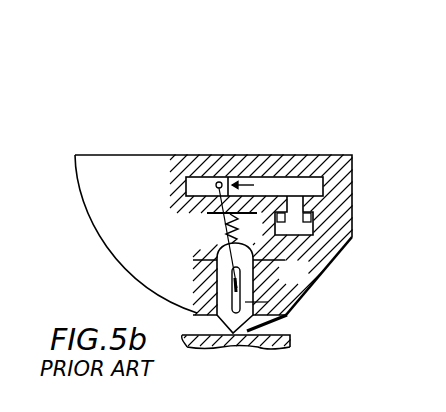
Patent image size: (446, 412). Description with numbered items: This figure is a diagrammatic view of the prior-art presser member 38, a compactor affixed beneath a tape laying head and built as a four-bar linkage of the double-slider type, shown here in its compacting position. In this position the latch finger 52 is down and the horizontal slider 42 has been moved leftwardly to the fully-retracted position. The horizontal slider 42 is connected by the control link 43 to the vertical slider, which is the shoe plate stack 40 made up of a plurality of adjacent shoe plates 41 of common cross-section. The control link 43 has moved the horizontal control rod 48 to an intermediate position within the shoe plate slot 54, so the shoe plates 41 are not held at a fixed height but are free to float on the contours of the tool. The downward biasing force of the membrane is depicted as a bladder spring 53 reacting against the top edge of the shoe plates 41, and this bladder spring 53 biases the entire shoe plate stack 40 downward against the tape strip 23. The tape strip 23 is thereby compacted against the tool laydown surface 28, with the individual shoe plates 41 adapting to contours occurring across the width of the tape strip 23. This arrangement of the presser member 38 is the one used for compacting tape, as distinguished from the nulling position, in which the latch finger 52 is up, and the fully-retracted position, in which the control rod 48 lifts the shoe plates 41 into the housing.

The presser member 38 is at (96, 244).
The horizontal slider 42 is at (207, 177).
The control link 43 is at (222, 217).
The bladder spring 53 is at (227, 237).
The shoe plates 41 is at (200, 253).
The control rod 48 is at (255, 290).
The latch finger 52 is at (306, 209).
The shoe plate slot 54 is at (298, 315).
The tool laydown surface 28 is at (272, 335).
The tape strip 23 is at (195, 313).
The shoe plate stack 40 is at (263, 349).